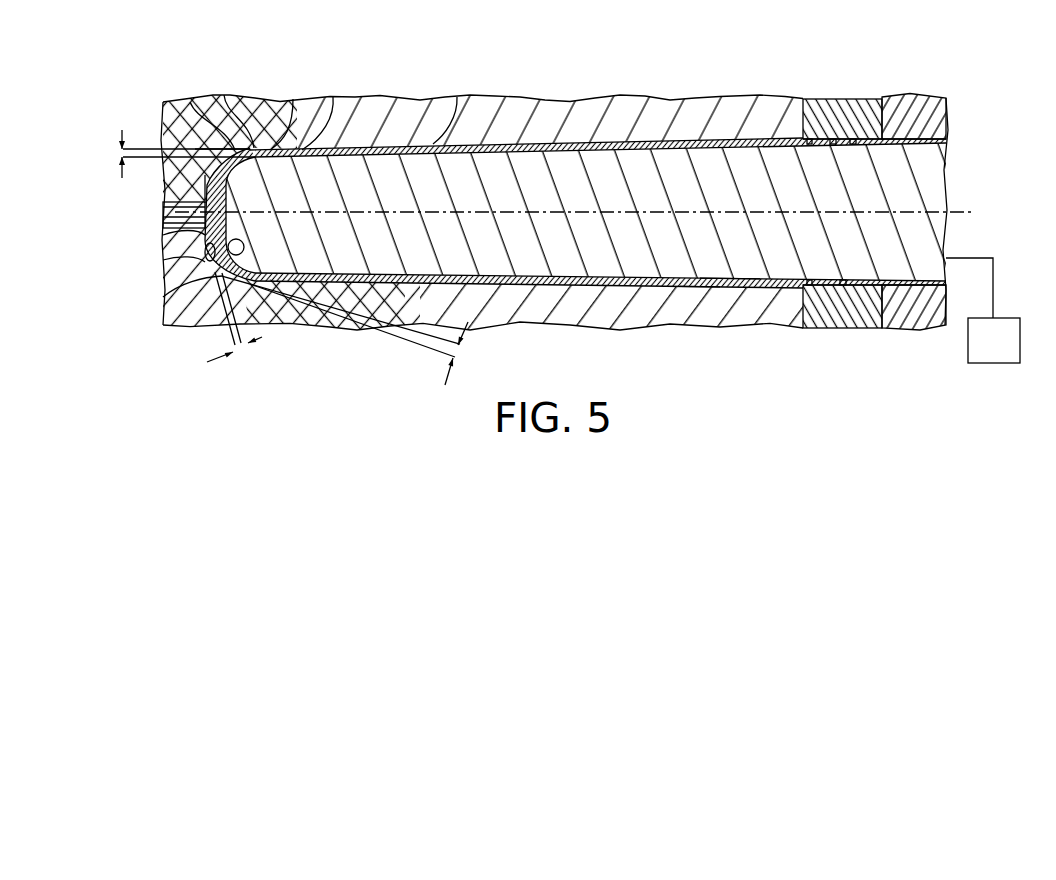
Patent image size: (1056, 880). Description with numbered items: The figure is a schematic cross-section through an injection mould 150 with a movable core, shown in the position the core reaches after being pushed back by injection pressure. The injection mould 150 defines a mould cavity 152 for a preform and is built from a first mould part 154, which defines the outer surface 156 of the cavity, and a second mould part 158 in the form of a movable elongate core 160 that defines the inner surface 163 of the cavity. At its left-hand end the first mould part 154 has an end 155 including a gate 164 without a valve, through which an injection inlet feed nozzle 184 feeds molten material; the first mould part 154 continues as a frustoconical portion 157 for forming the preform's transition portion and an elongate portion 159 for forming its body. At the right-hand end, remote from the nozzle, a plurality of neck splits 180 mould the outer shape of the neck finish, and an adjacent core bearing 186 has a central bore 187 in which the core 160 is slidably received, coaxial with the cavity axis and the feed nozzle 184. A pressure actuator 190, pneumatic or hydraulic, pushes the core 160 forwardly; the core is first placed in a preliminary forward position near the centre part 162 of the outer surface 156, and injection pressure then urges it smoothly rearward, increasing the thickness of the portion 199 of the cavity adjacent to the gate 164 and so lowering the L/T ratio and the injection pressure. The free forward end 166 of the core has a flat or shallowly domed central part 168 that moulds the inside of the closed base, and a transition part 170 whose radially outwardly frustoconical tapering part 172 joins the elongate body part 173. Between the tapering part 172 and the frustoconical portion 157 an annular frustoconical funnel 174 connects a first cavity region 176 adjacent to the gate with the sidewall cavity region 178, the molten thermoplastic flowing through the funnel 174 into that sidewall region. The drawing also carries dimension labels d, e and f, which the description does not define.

The injection mould 150 is at (642, 112).
The mould cavity 152 is at (627, 287).
The first mould part 154 is at (560, 313).
The end 155 is at (195, 258).
The outer surface 156 is at (533, 275).
The frustoconical portion 157 is at (190, 102).
The second mould part 158 is at (717, 152).
The elongate portion 159 is at (457, 97).
The movable elongate core 160 is at (733, 268).
The centre part 162 is at (208, 266).
The inner surface 163 is at (690, 290).
The gate 164 is at (195, 229).
The free forward end 166 is at (165, 102).
The central part 168 is at (212, 278).
The transition part 170 is at (224, 95).
The tapering part 172 is at (238, 298).
The elongate body part 173 is at (333, 97).
The funnel 174 is at (283, 312).
The first cavity region 176 is at (200, 203).
The sidewall cavity region 178 is at (293, 99).
The neck splits 180 is at (838, 102).
The injection inlet feed nozzle 184 is at (163, 217).
The core bearing 186 is at (908, 97).
The central bore 187 is at (942, 132).
The pressure actuator 190 is at (1012, 352).
The portion of the cavity 199 is at (195, 152).
The thickness d is at (234, 321).
The dimension e is at (348, 330).
The thickness f is at (181, 154).